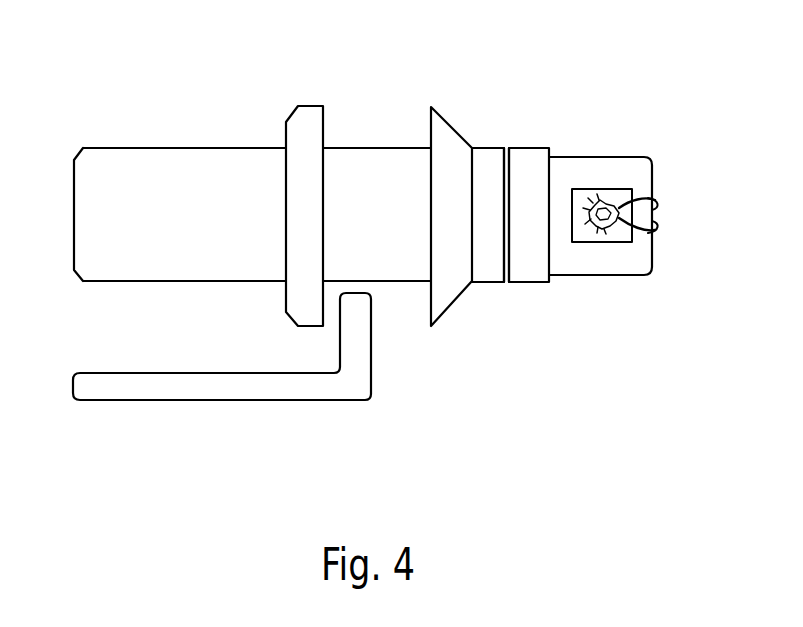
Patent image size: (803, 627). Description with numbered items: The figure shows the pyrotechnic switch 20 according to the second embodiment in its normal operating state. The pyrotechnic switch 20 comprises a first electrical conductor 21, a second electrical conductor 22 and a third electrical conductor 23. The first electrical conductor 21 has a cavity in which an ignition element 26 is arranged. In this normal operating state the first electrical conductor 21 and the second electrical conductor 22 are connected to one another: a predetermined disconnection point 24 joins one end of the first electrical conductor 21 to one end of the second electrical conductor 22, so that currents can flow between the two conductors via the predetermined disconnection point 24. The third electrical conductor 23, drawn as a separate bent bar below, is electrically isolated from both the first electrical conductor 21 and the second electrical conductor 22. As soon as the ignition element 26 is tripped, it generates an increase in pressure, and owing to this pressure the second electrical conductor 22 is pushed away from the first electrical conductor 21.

The pyrotechnic switch 20 is at (446, 157).
The first electrical conductor 21 is at (640, 175).
The second electrical conductor 22 is at (147, 165).
The third electrical conductor 23 is at (185, 390).
The predetermined disconnection point 24 is at (513, 268).
The ignition element 26 is at (615, 188).